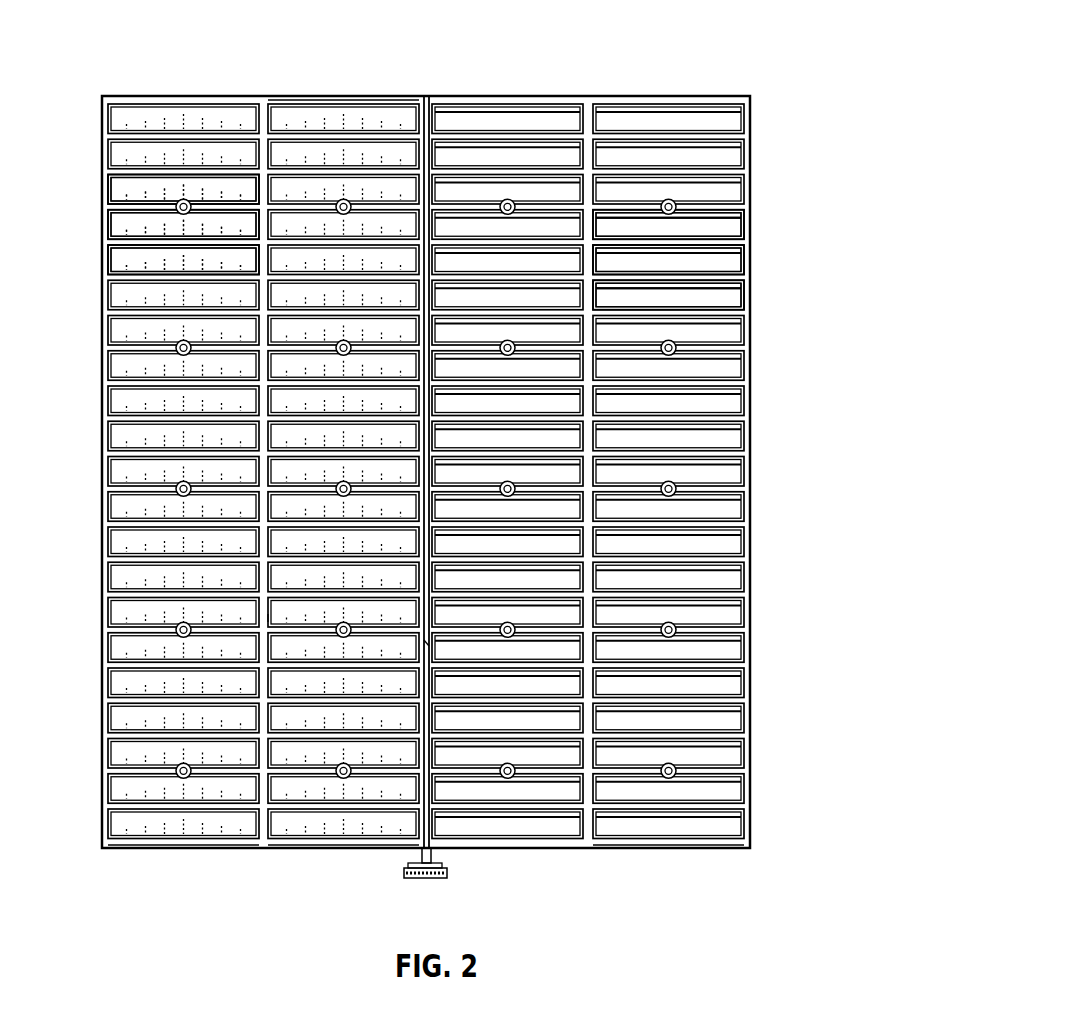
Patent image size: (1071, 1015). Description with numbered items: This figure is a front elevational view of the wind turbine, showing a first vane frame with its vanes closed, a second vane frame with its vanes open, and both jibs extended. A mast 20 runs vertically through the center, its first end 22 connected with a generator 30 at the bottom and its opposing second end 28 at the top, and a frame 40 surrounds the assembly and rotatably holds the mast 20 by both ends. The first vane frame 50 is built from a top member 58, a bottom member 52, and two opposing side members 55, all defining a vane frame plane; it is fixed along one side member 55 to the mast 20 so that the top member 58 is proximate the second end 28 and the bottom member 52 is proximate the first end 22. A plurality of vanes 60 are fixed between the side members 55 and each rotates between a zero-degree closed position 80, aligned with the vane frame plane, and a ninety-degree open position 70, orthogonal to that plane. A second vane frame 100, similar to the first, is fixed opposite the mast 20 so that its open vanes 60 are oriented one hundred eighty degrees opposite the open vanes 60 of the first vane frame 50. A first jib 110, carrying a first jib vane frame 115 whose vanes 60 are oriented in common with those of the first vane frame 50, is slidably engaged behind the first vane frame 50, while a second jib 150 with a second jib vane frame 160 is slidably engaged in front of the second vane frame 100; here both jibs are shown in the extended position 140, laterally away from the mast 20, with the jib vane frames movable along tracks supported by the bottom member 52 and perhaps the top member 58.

The mast 20 is at (436, 470).
The first end 22 is at (431, 852).
The second end 28 is at (432, 100).
The generator 30 is at (445, 877).
The frame 40 is at (148, 97).
The first vane frame 50 is at (333, 98).
The bottom member 52 is at (318, 846).
The side members 55 is at (267, 618).
The top member 58 is at (389, 101).
The vanes 60 is at (123, 186).
The open position 70 is at (713, 426).
The closed position 80 is at (158, 427).
The second vane frame 100 is at (531, 98).
The first jib 110 is at (158, 427).
The first jib vane frame 115 is at (221, 98).
The extended position 140 is at (127, 845).
The second jib 150 is at (713, 426).
The second jib vane frame 160 is at (681, 98).